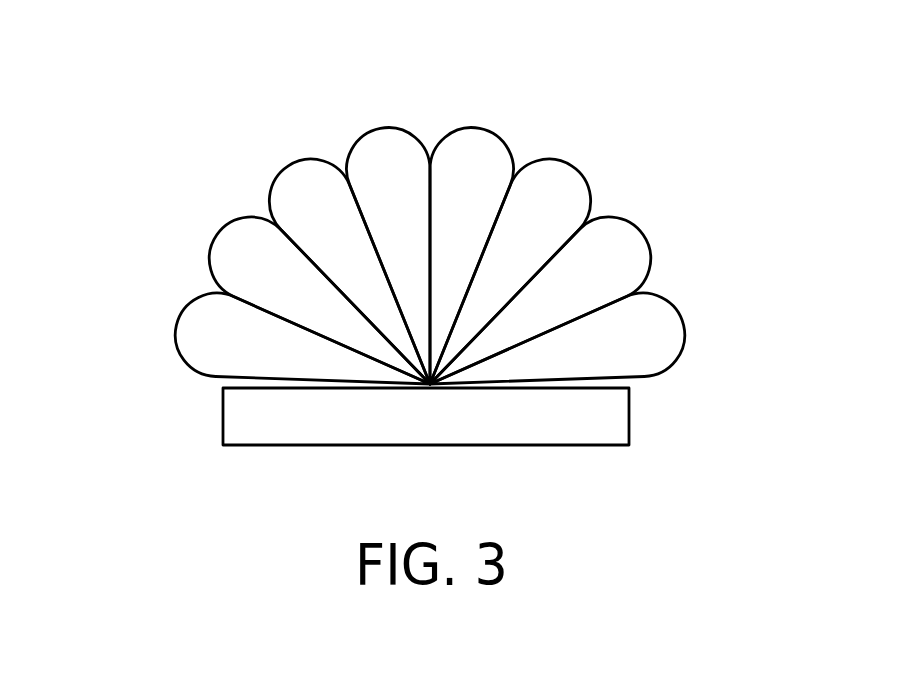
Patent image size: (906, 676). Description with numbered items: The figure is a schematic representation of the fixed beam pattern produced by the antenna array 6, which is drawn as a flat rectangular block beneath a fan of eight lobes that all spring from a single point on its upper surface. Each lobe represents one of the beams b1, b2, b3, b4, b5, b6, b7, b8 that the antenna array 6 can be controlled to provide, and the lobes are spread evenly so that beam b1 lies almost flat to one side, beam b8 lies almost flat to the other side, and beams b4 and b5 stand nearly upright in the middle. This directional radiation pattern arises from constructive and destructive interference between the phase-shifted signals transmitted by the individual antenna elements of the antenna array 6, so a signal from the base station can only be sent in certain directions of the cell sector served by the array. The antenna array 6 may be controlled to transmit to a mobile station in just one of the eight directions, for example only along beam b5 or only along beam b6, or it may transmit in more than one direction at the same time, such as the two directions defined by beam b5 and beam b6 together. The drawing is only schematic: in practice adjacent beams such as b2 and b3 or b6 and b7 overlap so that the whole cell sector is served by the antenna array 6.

The beam b1 is at (196, 325).
The beam b2 is at (224, 249).
The beam b3 is at (289, 184).
The beam b4 is at (379, 141).
The beam b5 is at (479, 134).
The beam b6 is at (571, 179).
The beam b7 is at (629, 246).
The beam b8 is at (662, 322).
The antenna array 6 is at (435, 423).